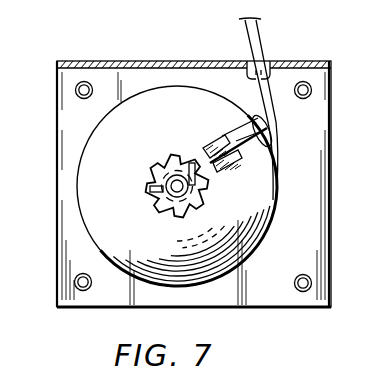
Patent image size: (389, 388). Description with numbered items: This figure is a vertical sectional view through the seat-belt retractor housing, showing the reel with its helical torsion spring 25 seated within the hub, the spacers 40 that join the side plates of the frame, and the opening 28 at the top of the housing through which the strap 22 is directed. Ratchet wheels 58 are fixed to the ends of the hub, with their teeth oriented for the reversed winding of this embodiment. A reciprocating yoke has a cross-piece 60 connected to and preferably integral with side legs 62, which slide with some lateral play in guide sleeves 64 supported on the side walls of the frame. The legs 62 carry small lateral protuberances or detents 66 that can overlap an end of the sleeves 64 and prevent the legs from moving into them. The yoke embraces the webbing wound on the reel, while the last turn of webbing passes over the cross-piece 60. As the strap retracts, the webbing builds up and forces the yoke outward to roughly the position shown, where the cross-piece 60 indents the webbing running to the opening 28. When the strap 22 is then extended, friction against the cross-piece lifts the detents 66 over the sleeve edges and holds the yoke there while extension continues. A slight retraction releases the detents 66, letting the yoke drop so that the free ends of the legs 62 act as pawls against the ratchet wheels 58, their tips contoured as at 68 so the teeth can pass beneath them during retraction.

The strap 22 is at (258, 40).
The helical torsion spring 25 is at (162, 195).
The opening 28 is at (270, 62).
The spacers 40 is at (88, 82).
The ratchet wheels 58 is at (168, 152).
The cross-piece 60 is at (270, 128).
The side legs 62 is at (272, 158).
The guide sleeves 64 is at (223, 136).
The detents 66 is at (234, 143).
The pawl contour 68 is at (212, 156).